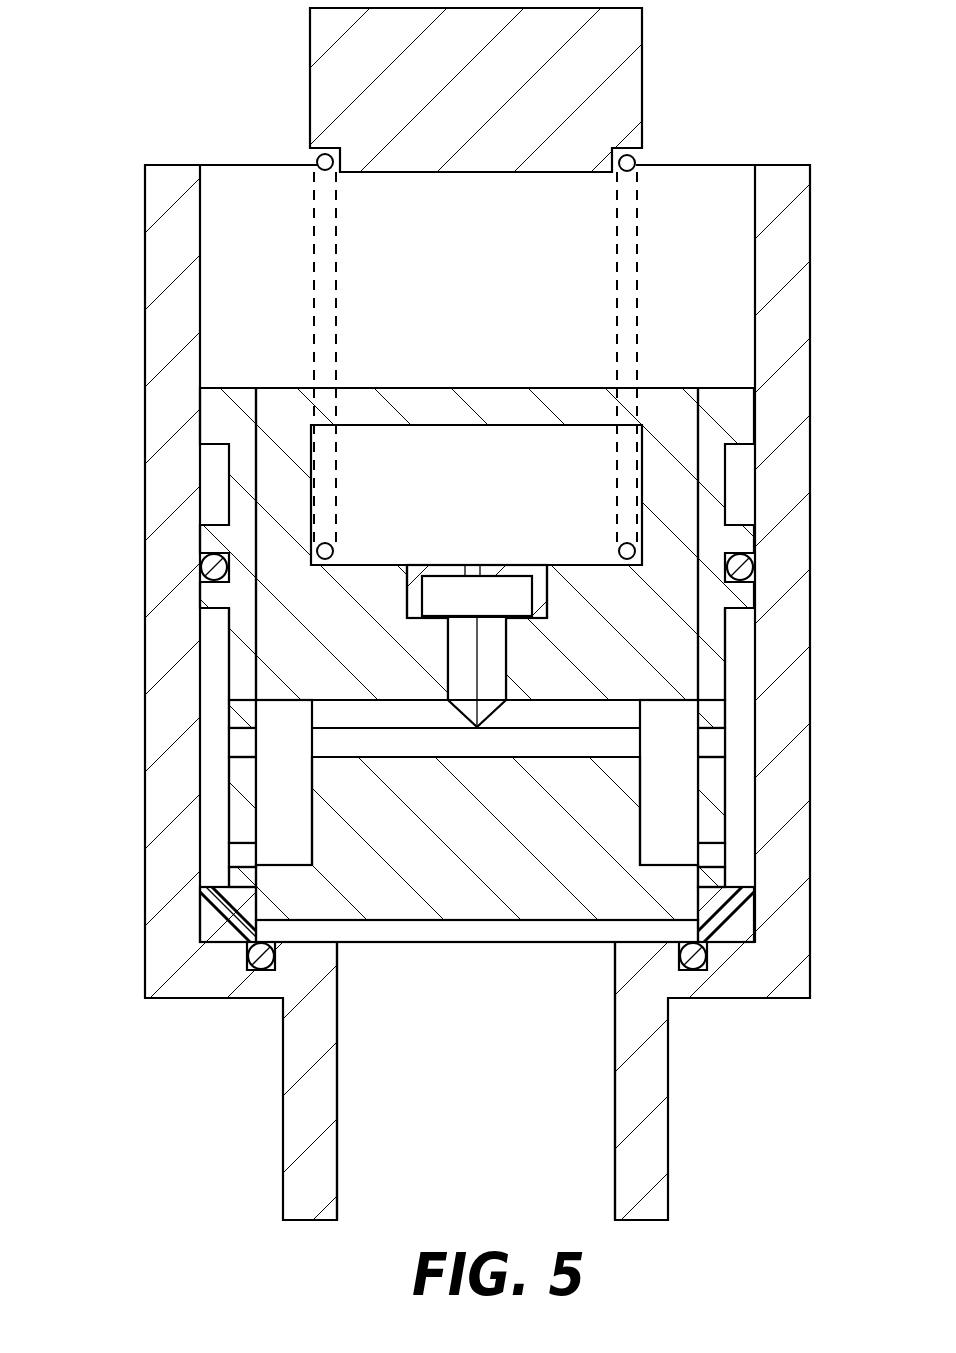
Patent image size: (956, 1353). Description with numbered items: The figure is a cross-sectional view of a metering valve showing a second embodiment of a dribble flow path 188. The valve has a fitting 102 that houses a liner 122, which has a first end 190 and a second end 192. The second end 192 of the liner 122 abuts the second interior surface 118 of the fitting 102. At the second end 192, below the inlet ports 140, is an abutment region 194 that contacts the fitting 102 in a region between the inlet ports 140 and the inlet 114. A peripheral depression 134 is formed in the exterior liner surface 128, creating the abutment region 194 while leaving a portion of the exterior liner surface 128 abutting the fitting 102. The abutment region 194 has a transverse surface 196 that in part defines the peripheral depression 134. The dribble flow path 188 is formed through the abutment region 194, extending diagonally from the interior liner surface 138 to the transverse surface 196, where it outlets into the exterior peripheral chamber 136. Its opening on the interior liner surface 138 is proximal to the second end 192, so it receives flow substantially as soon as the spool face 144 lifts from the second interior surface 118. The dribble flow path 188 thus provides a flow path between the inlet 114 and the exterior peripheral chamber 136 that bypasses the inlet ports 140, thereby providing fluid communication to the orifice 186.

The fitting 102 is at (160, 813).
The inlet 114 is at (470, 1068).
The second interior surface 118 is at (306, 940).
The liner 122 is at (212, 595).
The exterior liner surface 128 is at (200, 933).
The peripheral depression 134 is at (226, 768).
The exterior peripheral chamber 136 is at (203, 698).
The interior liner surface 138 is at (258, 815).
The inlet ports 140 is at (222, 857).
The spool face 144 is at (447, 920).
The orifice 186 is at (482, 556).
The dribble flow path 188 is at (246, 902).
The first end 190 is at (222, 388).
The second end 192 is at (212, 947).
The abutment region 194 is at (208, 902).
The transverse surface 196 is at (208, 888).